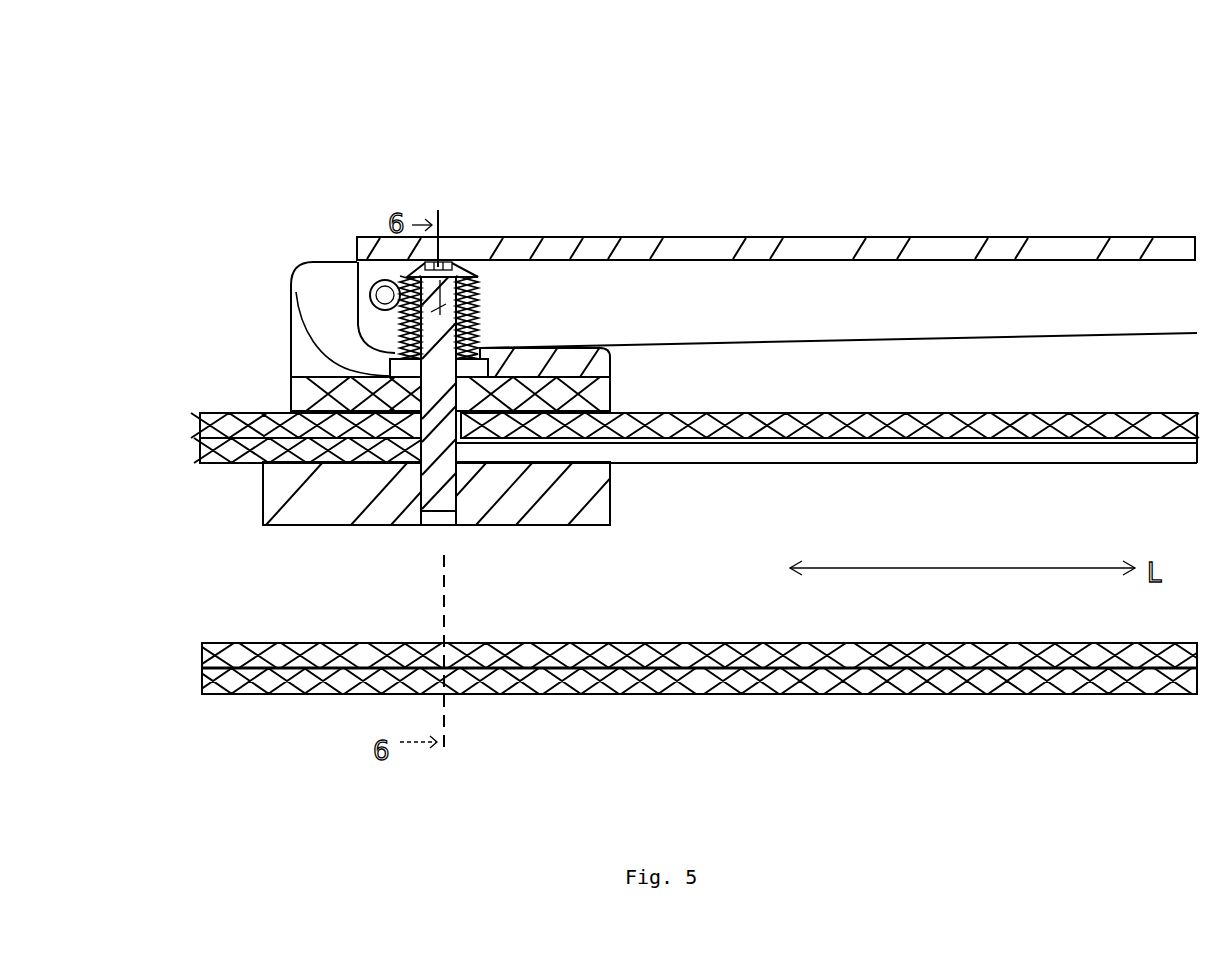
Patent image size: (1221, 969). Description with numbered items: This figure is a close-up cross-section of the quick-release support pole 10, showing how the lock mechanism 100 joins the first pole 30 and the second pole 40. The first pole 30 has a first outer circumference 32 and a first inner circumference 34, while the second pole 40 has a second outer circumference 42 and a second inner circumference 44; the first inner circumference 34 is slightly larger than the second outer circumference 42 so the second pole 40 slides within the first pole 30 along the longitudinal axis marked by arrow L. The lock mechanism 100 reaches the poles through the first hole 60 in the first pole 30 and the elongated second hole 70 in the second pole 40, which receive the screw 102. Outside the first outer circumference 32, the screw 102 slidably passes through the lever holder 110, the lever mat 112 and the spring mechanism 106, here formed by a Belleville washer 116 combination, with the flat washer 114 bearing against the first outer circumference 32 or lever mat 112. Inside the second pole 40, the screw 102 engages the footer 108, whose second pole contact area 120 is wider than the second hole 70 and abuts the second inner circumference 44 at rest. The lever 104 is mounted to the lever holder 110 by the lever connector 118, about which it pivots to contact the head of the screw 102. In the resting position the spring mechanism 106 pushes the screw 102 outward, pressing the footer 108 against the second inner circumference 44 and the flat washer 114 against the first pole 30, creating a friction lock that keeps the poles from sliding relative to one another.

The quick-release support pole 10 is at (748, 125).
The first pole 30 is at (997, 425).
The first outer circumference 32 is at (778, 412).
The first inner circumference 34 is at (822, 438).
The second pole 40 is at (1070, 455).
The second outer circumference 42 is at (752, 670).
The second inner circumference 44 is at (818, 465).
The first hole 60 is at (290, 395).
The second hole 70 is at (290, 407).
The lock mechanism 100 is at (504, 323).
The screw 102 is at (290, 277).
The lever 104 is at (912, 237).
The spring mechanism 106 is at (487, 372).
The footer 108 is at (597, 490).
The lever holder 110 is at (303, 270).
The lever mat 112 is at (290, 383).
The flat washer 114 is at (483, 310).
The Belleville washer 116 is at (478, 283).
The lever connector 118 is at (345, 268).
The second pole contact area 120 is at (495, 458).